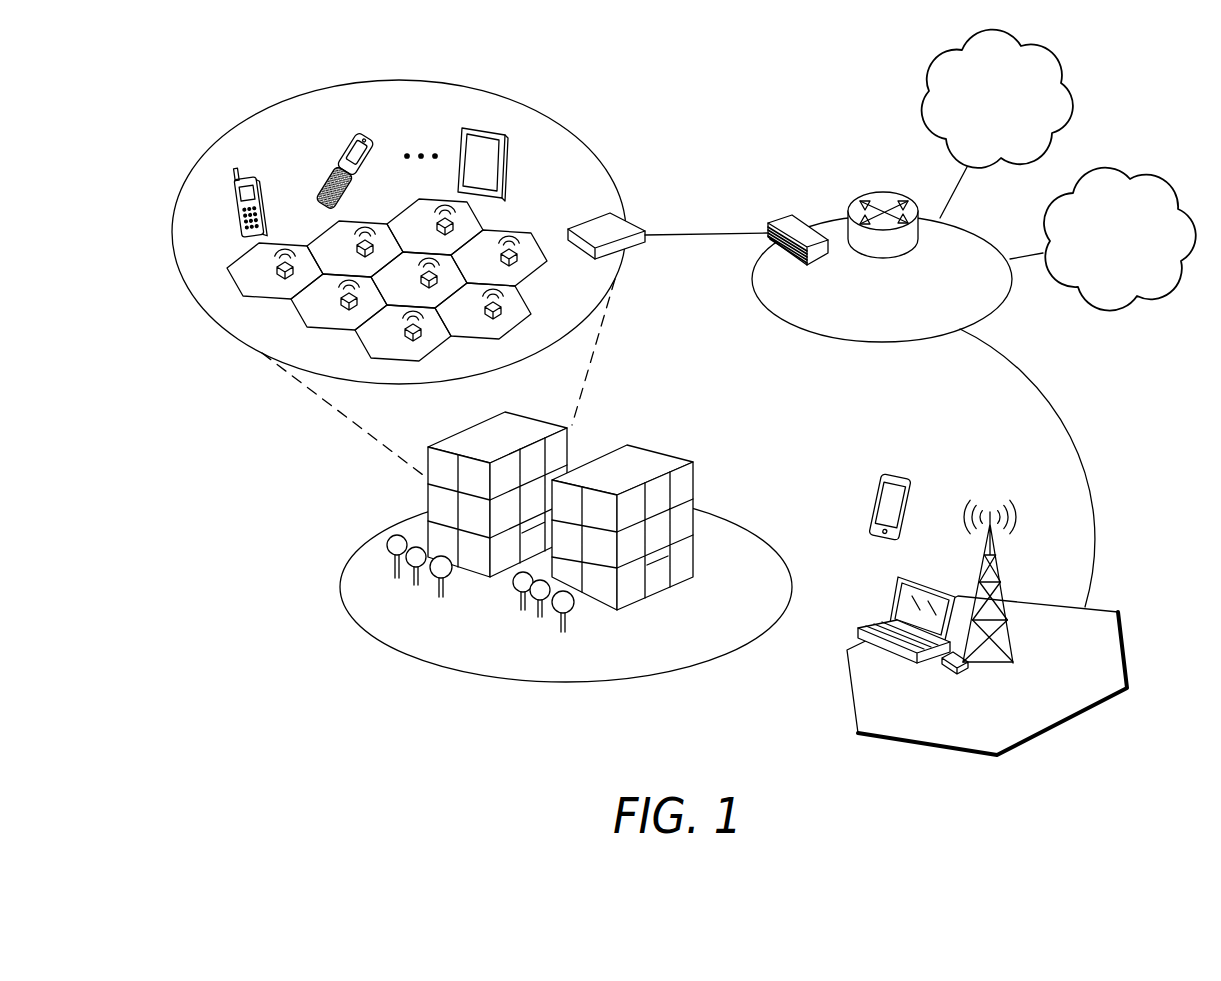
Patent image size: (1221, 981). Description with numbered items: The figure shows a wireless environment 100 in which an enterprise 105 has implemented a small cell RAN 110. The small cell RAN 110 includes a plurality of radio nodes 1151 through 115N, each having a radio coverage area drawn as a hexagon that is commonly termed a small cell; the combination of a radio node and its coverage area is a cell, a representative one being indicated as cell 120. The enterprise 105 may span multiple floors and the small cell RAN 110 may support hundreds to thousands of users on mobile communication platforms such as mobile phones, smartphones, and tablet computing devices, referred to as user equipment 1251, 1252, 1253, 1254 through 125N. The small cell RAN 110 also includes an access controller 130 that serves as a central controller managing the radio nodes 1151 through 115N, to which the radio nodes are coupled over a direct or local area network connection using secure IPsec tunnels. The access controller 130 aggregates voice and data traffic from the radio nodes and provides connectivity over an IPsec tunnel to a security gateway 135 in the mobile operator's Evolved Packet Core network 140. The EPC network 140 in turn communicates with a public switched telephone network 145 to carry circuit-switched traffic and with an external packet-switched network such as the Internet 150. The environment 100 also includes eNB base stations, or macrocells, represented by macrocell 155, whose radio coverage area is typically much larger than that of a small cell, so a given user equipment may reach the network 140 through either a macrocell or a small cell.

The environment 100 is at (653, 384).
The enterprise 105 is at (342, 574).
The small cell RAN 110 is at (472, 88).
The radio node 1151 is at (503, 319).
The radio node 115N is at (506, 266).
The cell 120 is at (402, 301).
The user equipment 1251 is at (898, 472).
The user equipment 1252 is at (890, 620).
The user equipment 1253 is at (233, 205).
The user equipment 1254 is at (342, 143).
The user equipment 125N is at (510, 150).
The access controller 130 is at (636, 218).
The security gateway 135 is at (787, 215).
The Evolved Packet Core network 140 is at (878, 343).
The public switched telephone network 145 is at (1143, 174).
The Internet 150 is at (1025, 35).
The macrocell 155 is at (1058, 600).